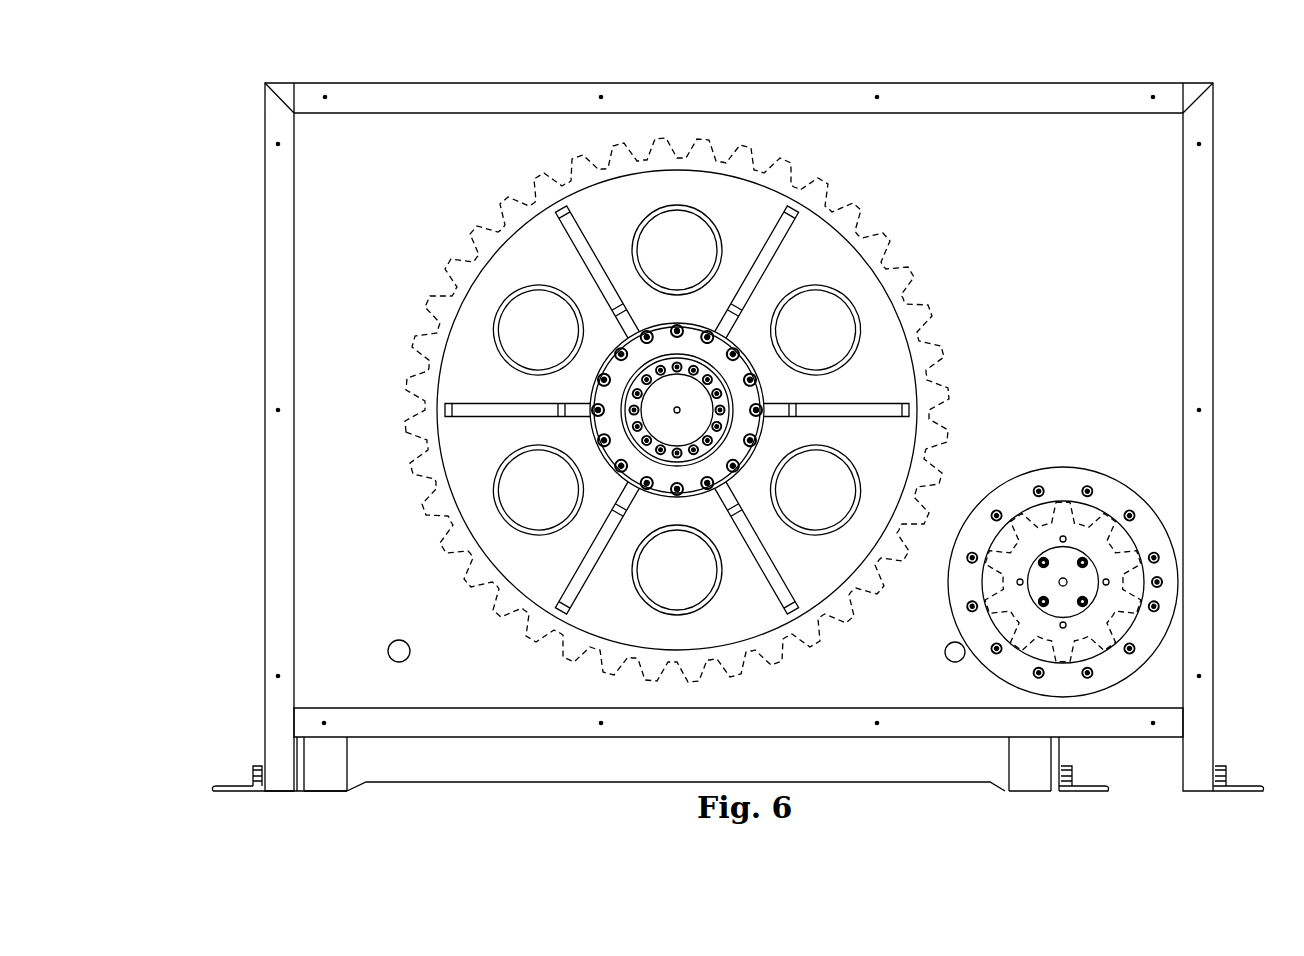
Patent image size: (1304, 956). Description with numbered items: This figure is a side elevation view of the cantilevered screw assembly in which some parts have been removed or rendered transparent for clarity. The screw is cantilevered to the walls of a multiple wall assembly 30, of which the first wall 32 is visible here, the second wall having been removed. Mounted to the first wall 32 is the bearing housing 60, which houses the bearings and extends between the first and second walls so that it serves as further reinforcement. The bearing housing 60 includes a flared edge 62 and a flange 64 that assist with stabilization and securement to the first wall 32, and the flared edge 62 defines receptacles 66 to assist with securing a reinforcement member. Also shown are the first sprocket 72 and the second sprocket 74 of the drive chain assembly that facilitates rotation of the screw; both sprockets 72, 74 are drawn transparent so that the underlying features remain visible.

The multiple wall assembly 30 is at (240, 110).
The first wall 32 is at (340, 200).
The bearing housing 60 is at (588, 435).
The flared edge 62 is at (438, 368).
The flange 64 is at (585, 260).
The receptacle 66 is at (678, 205).
The first sprocket 72 is at (428, 470).
The second sprocket 74 is at (1130, 610).